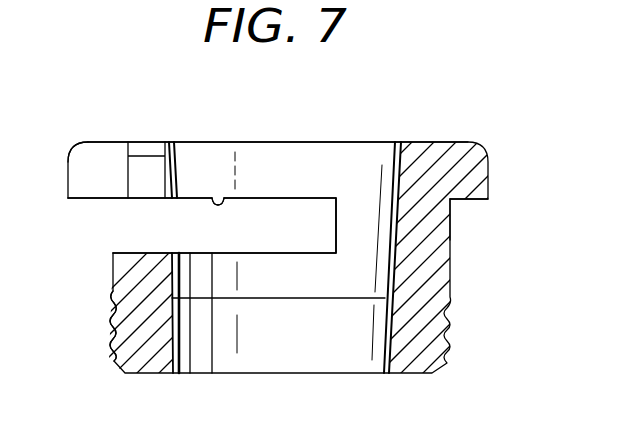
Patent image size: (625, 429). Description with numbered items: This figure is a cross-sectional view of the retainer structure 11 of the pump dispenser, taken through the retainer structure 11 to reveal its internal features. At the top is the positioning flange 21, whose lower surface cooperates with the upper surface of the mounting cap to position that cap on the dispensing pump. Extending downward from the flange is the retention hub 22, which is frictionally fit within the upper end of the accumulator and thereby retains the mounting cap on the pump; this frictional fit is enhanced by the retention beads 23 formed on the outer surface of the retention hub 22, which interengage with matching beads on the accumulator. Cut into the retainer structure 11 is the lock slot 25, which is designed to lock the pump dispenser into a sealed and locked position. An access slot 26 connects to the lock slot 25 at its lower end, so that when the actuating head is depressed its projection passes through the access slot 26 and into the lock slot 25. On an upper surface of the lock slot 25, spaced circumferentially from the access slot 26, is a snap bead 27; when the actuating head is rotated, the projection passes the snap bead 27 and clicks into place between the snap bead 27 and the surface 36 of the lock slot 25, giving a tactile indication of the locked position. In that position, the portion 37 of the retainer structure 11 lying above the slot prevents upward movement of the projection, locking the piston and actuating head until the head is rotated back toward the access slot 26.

The retainer structure 11 is at (500, 297).
The positioning flange 21 is at (68, 173).
The retention hub 22 is at (452, 233).
The retention beads 23 is at (110, 333).
The lock slot 25 is at (143, 225).
The access slot 26 is at (148, 170).
The snap bead 27 is at (225, 201).
The surface of lock slot 36 is at (335, 228).
The portion of retainer structure 37 is at (268, 143).